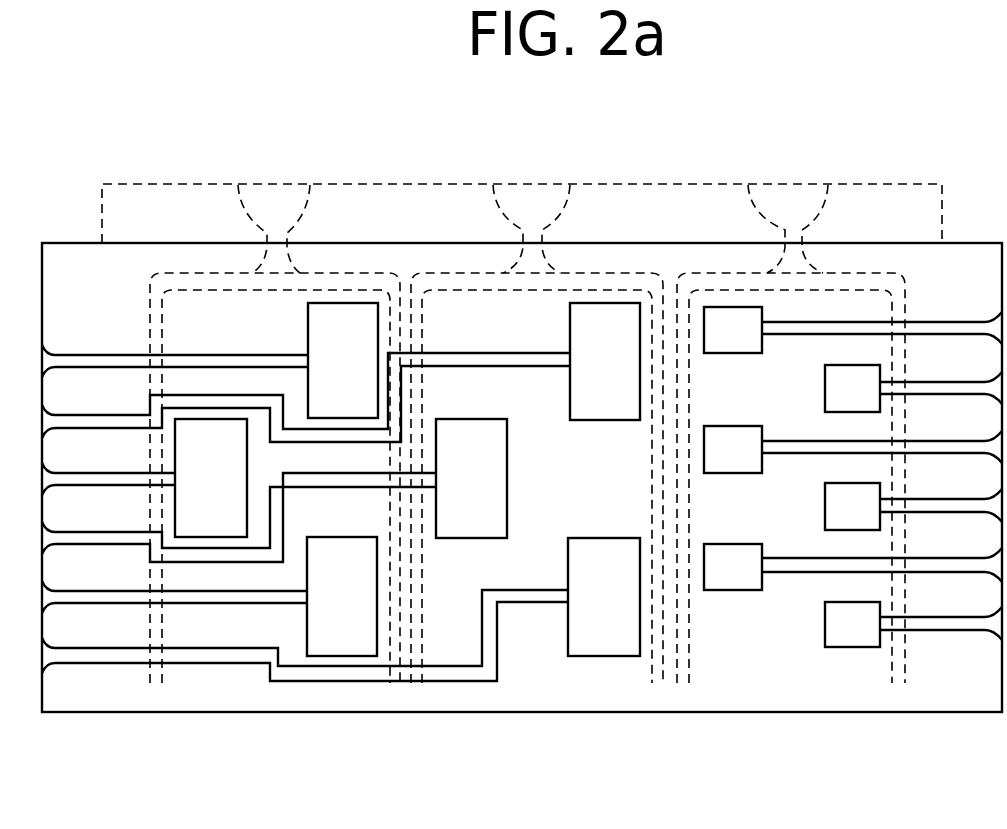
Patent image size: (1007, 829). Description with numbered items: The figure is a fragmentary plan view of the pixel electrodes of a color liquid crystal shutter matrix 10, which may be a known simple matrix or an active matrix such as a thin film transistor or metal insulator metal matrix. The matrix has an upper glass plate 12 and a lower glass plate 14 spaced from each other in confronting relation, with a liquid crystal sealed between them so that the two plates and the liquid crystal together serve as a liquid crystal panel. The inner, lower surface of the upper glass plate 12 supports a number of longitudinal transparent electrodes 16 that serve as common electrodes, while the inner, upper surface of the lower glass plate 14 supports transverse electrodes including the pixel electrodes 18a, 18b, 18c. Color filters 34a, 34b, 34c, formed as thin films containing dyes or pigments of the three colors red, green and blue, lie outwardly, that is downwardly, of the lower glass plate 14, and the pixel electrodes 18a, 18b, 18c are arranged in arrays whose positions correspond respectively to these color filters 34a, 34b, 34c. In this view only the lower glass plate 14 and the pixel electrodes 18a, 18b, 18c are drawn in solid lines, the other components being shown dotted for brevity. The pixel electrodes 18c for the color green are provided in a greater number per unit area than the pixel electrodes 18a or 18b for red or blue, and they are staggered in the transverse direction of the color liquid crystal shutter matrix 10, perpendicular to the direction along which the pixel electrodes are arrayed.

The color liquid crystal shutter matrix 10 is at (604, 158).
The upper glass plate 12 is at (914, 205).
The lower glass plate 14 is at (975, 273).
The longitudinal transparent electrodes 16 is at (288, 183).
The pixel electrodes 18a is at (328, 342).
The pixel electrodes 18b is at (597, 392).
The pixel electrodes 18c is at (737, 328).
The color filters 34a is at (187, 303).
The color filters 34b is at (458, 300).
The color filters 34c is at (827, 303).